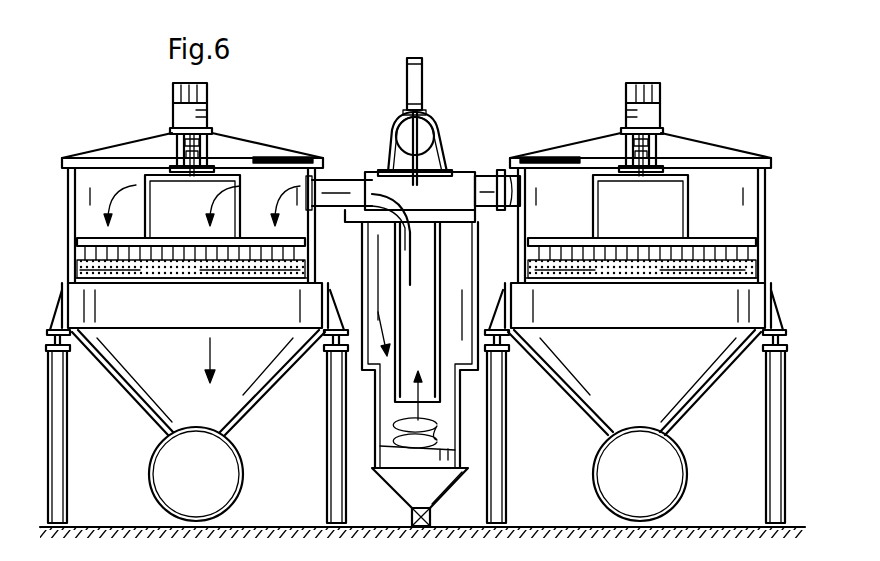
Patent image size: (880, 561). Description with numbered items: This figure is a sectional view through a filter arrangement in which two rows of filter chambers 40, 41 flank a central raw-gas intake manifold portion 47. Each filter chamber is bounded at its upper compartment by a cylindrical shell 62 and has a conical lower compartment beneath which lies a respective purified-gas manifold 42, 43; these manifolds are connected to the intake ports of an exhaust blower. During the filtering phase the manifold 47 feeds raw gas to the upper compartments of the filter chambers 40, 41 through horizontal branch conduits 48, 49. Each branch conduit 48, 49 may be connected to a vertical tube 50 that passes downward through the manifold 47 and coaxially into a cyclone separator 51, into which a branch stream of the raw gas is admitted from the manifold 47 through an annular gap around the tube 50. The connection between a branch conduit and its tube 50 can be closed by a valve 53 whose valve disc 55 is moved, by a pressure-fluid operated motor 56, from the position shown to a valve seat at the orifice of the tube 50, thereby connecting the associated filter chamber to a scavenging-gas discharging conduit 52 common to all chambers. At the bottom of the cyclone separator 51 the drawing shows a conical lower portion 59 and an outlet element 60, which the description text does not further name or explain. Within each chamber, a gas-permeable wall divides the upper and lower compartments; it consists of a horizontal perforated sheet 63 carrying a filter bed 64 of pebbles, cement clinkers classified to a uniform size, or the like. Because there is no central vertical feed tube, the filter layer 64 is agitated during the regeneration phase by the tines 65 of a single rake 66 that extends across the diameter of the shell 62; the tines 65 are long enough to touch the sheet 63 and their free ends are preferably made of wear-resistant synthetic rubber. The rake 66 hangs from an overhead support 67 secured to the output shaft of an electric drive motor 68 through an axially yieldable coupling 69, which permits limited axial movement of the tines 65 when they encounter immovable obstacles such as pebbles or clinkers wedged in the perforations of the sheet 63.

The filter chamber 40 is at (244, 138).
The filter chamber 41 is at (585, 137).
The purified-gas manifold 42 is at (232, 457).
The purified-gas manifold 43 is at (613, 463).
The manifold portion 47 is at (446, 358).
The horizontal branch conduit 48 is at (354, 179).
The horizontal branch conduit 49 is at (485, 182).
The vertical tube 50 is at (442, 264).
The cyclone separator 51 is at (455, 448).
The scavenging-gas discharging conduit 52 is at (399, 141).
The valve 53 is at (408, 124).
The valve disc 55 is at (445, 175).
The pressure-fluid operated motor 56 is at (424, 116).
The discharge funnel 59 is at (437, 515).
The outlet valve 60 is at (414, 516).
The cylindrical shell 62 is at (72, 186).
The perforated sheet 63 is at (188, 279).
The filter bed 64 is at (245, 279).
The tines 65 is at (133, 279).
The rake 66 is at (168, 238).
The overhead support 67 is at (148, 176).
The electric drive motor 68 is at (207, 120).
The axially yieldable coupling 69 is at (181, 148).